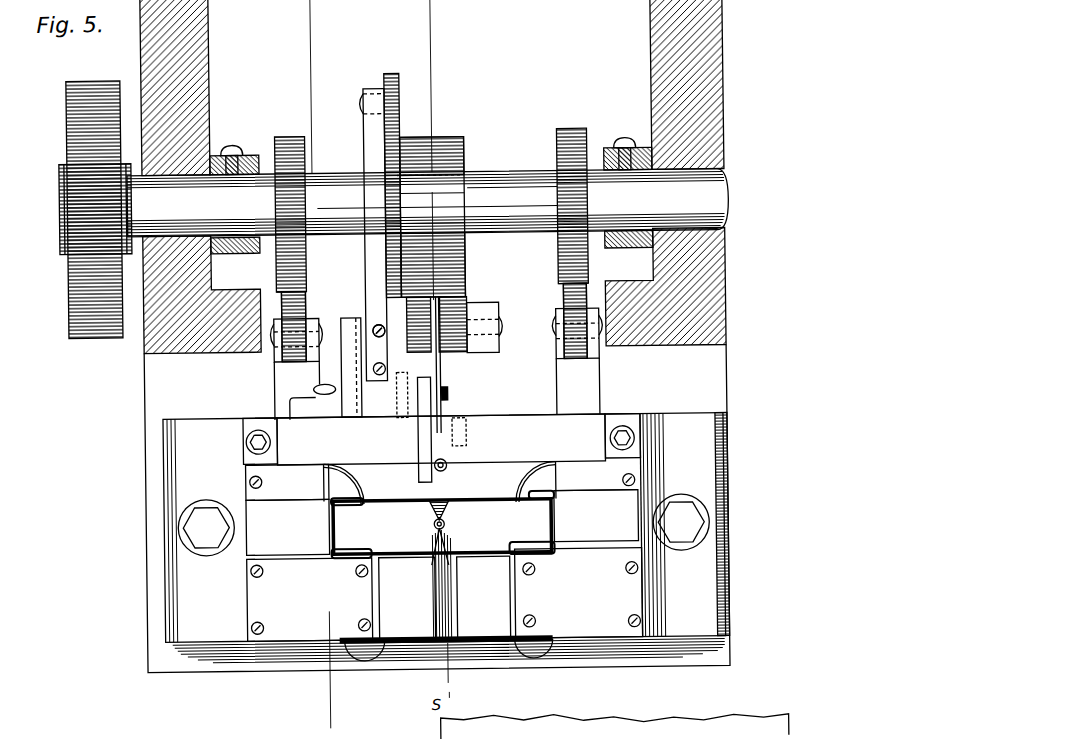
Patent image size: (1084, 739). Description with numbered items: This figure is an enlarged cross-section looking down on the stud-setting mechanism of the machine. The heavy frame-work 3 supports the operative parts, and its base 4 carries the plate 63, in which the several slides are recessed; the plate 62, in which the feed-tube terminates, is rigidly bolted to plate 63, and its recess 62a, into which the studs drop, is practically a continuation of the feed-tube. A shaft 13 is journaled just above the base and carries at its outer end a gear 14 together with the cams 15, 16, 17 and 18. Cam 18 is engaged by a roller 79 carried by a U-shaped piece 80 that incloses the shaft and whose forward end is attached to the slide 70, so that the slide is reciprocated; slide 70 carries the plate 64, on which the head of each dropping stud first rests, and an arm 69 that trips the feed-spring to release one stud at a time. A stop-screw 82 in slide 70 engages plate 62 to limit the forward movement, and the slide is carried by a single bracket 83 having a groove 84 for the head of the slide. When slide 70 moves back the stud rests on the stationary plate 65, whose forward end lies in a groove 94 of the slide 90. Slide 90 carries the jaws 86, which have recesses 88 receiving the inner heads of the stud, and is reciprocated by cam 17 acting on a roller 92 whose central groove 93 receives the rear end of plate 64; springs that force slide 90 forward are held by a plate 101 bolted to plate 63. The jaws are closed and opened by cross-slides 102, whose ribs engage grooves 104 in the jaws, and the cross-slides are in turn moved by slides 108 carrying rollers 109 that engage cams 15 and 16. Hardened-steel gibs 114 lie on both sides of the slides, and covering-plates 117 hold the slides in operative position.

The frame-work 3 is at (213, 66).
The base 4 is at (395, 151).
The shaft 13 is at (428, 202).
The gear 14 is at (72, 289).
The cam 15 is at (291, 135).
The cam 16 is at (576, 130).
The cam 17 is at (445, 136).
The cam 18 is at (392, 183).
The plate 62 is at (443, 528).
The recess 62a is at (447, 464).
The plate 63 is at (446, 537).
The plate 64 is at (446, 378).
The stationary plate 65 is at (466, 428).
The arm 69 is at (418, 460).
The slide 70 is at (389, 394).
The roller 79 is at (396, 73).
The U-shaped piece 80 is at (370, 236).
The stop-screw 82 is at (408, 362).
The bracket 83 is at (317, 402).
The groove 84 is at (362, 356).
The jaws 86 is at (442, 527).
The recesses 88 is at (445, 523).
The slide 90 is at (407, 598).
The roller 92 is at (470, 324).
The groove 93 is at (434, 330).
The groove 94 is at (456, 607).
The plate 101 is at (413, 640).
The cross-slides 102 is at (442, 523).
The groove 104 is at (352, 560).
The slides 108 is at (436, 364).
The rollers 109 is at (310, 306).
The gibs 114 is at (308, 503).
The covering-plates 117 is at (443, 536).